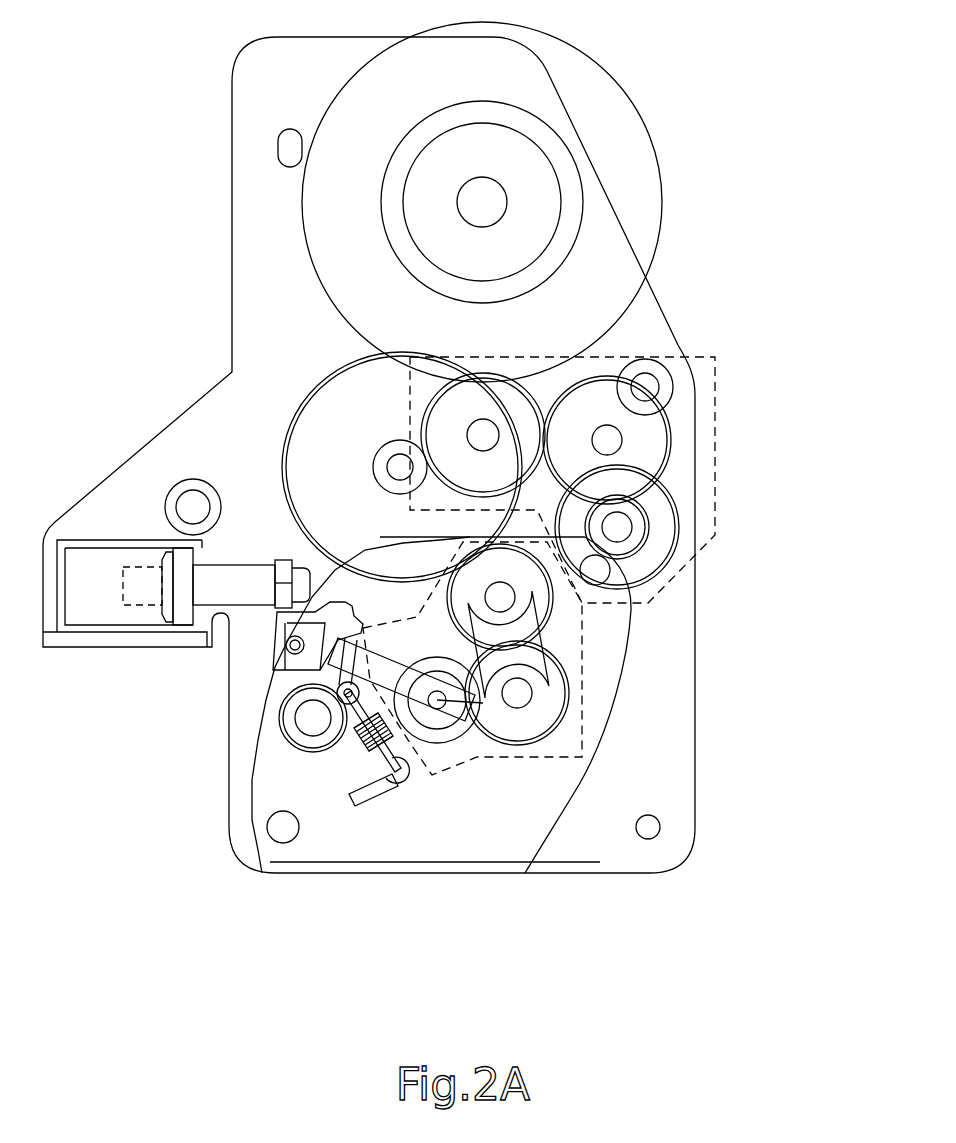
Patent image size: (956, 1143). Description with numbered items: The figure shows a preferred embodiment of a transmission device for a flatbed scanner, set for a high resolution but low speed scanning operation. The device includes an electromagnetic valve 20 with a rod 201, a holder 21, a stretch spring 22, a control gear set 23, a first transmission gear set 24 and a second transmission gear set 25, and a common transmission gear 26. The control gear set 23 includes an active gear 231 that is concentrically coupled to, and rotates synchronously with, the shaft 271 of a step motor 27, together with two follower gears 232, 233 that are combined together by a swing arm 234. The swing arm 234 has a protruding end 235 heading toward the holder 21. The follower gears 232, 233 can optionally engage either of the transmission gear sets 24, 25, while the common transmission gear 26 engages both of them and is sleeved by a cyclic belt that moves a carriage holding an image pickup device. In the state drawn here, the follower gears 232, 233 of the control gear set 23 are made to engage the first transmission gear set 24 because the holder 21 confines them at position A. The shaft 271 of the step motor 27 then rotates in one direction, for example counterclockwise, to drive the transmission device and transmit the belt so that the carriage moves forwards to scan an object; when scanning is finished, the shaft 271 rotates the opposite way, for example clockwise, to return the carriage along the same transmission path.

The electromagnetic valve 20 is at (102, 608).
The rod 201 is at (215, 590).
The holder 21 is at (303, 675).
The stretch spring 22 is at (373, 748).
The control gear set 23 is at (550, 747).
The active gear 231 is at (440, 710).
The follower gear 232 is at (557, 677).
The follower gear 233 is at (543, 603).
The swing arm 234 is at (537, 705).
The protruding end 235 is at (297, 740).
The first transmission gear set 24 is at (323, 443).
The second transmission gear set 25 is at (703, 430).
The common transmission gear 26 is at (637, 220).
The step motor 27 is at (367, 832).
The shaft 271 is at (437, 700).
The position A is at (372, 665).